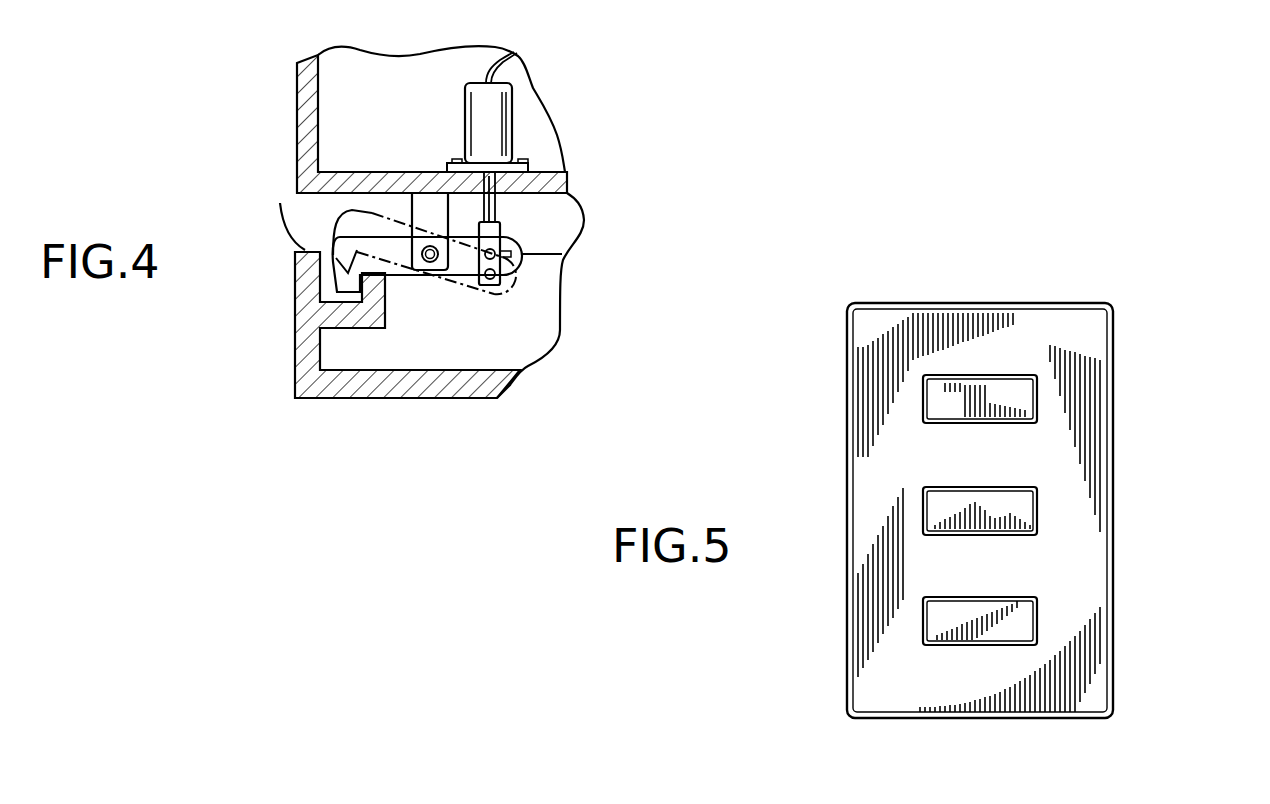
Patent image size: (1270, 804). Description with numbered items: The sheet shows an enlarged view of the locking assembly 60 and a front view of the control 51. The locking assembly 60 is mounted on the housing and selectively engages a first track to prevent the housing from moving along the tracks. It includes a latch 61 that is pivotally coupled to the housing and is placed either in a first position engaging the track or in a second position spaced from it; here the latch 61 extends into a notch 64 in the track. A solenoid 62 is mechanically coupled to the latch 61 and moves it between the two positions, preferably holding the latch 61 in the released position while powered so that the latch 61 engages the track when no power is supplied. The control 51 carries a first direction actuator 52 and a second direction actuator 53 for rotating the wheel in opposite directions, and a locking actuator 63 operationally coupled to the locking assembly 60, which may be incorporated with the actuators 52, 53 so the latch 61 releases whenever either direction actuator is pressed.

In FIG. 4, the locking assembly 60 is at (600, 299).
In FIG. 4, the latch 61 is at (324, 253).
In FIG. 4, the solenoid 62 is at (513, 115).
In FIG. 4, the notch 64 is at (297, 292).
In FIG. 5, the control 51 is at (1100, 277).
In FIG. 5, the first direction actuator 52 is at (984, 376).
In FIG. 5, the second direction actuator 53 is at (923, 487).
In FIG. 5, the locking actuator 63 is at (923, 622).